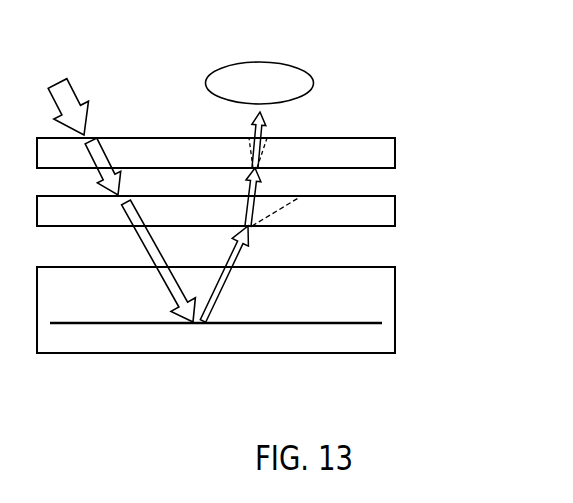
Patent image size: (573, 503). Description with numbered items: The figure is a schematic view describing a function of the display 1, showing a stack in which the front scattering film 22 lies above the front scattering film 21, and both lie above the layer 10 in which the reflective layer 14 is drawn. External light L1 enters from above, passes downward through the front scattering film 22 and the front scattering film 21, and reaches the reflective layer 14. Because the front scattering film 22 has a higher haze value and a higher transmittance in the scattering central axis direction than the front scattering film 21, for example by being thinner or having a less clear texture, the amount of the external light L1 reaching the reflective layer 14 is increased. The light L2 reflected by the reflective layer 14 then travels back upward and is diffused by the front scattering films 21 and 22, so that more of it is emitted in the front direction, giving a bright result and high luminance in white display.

The display device 1 is at (463, 92).
The light guide plate 10 is at (385, 303).
The reflective layer 14 is at (320, 325).
The front scattering film 21 is at (385, 212).
The front scattering film 22 is at (385, 153).
The external light L1 is at (74, 93).
The light reflected by the reflective layer L2 is at (213, 306).